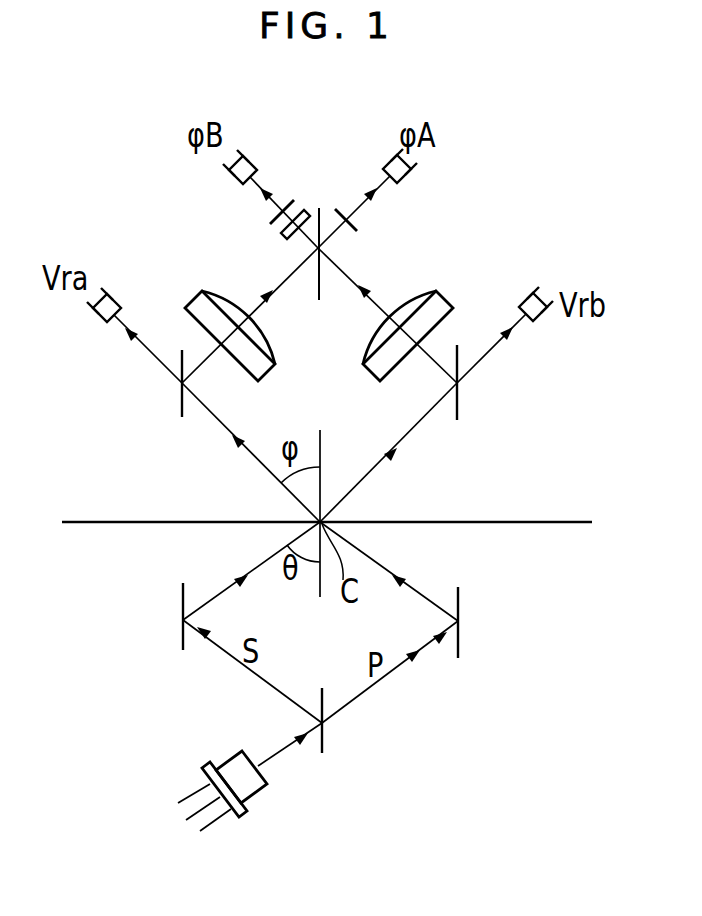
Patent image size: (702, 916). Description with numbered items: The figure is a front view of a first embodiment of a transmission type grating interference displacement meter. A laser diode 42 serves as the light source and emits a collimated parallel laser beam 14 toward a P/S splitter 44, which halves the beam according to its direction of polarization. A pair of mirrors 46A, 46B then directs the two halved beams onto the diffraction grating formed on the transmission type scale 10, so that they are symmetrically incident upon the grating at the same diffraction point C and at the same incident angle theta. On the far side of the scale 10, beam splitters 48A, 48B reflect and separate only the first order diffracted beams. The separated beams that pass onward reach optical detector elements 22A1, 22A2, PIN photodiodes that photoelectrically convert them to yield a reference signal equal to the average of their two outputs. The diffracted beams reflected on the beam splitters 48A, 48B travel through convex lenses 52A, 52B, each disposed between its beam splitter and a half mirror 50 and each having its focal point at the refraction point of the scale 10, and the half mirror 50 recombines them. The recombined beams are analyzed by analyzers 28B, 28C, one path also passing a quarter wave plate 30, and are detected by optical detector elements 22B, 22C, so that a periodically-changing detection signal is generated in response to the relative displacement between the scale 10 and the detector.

The transmission type scale 10 is at (108, 521).
The laser beam 14 is at (275, 752).
The optical detector element 22A1 is at (98, 322).
The optical detector element 22A2 is at (542, 320).
The optical detector element 22B is at (407, 182).
The optical detector element 22C is at (256, 168).
The analyzer 28B is at (352, 228).
The analyzer 28C is at (272, 218).
The quarter wave plate 30 is at (290, 236).
The laser diode 42 is at (260, 795).
The P/S splitter 44 is at (324, 733).
The mirror 46A is at (460, 643).
The mirror 46B is at (182, 640).
The beam splitter 48A is at (182, 417).
The beam splitter 48B is at (458, 405).
The half mirror 50 is at (319, 301).
The convex lens 52A is at (195, 296).
The convex lens 52B is at (448, 300).